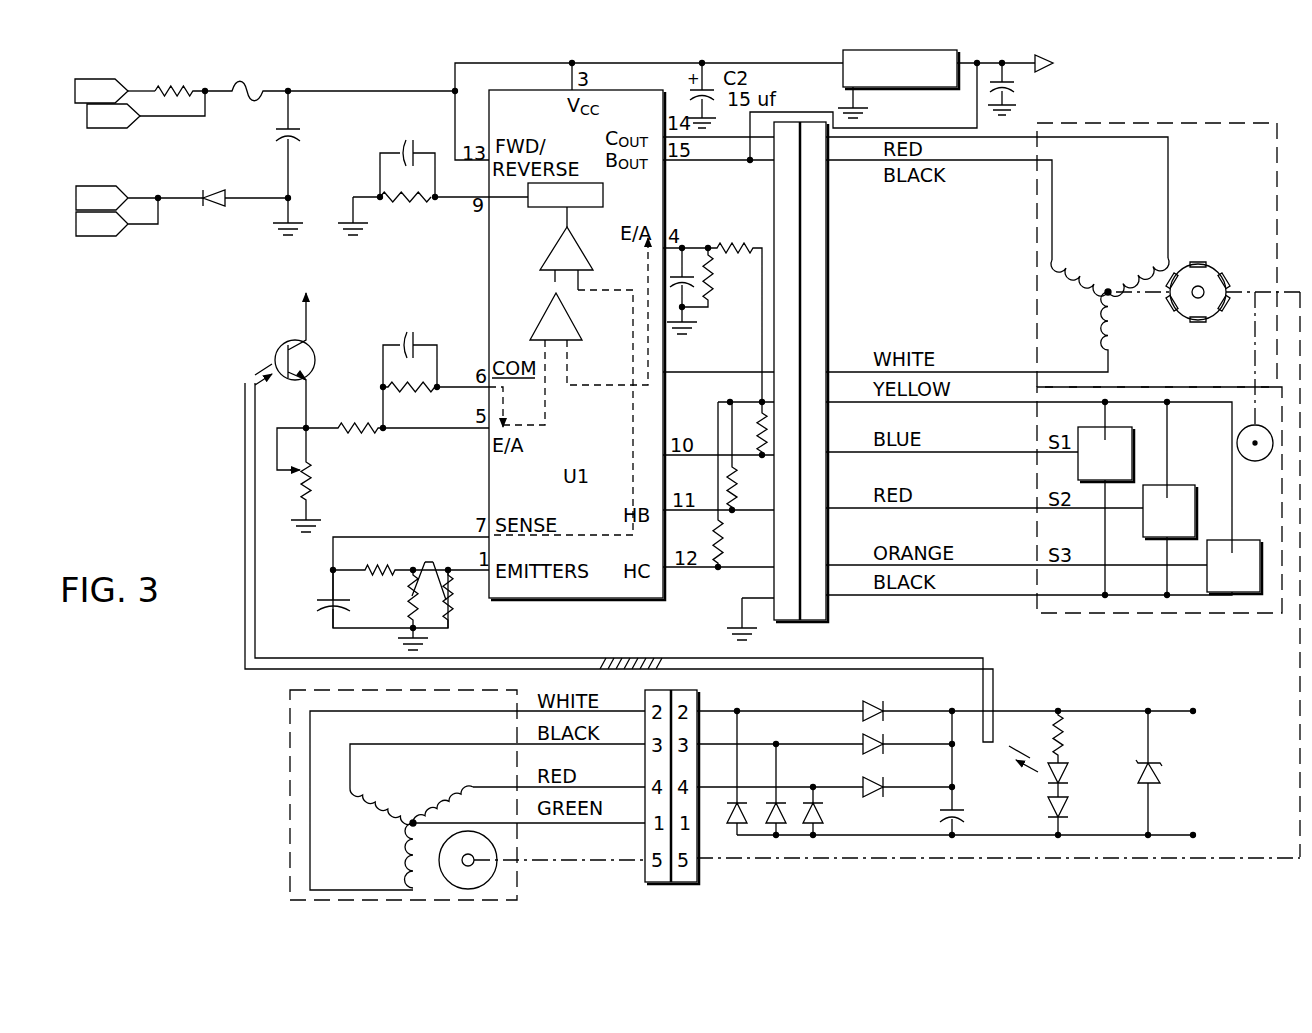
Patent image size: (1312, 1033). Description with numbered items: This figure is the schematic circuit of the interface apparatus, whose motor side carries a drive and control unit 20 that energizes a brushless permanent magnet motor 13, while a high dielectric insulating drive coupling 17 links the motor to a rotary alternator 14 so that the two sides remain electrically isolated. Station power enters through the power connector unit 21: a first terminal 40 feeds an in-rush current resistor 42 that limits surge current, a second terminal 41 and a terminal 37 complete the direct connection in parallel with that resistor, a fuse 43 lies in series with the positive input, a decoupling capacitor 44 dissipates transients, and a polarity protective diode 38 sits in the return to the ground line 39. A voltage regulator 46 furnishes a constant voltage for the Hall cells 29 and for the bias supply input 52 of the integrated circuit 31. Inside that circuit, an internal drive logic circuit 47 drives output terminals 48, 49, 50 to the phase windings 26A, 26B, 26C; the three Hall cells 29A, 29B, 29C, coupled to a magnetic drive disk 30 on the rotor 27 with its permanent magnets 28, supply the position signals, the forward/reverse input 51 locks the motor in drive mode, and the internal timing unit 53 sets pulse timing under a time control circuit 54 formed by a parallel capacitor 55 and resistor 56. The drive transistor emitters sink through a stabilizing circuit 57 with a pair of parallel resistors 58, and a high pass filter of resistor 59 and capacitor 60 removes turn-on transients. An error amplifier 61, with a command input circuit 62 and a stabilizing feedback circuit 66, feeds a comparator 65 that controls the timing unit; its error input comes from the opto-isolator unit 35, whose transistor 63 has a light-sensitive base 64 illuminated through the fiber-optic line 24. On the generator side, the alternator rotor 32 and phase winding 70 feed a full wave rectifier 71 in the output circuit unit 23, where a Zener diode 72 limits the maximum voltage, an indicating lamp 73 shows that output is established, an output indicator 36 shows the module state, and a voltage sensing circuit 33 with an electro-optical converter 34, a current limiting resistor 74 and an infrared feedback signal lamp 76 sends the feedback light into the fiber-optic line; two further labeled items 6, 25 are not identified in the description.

The first terminal 40 is at (95, 78).
The second terminal 41 is at (113, 130).
The surge or in-rush current resistor 42 is at (170, 85).
The fuse 43 is at (257, 83).
The decoupling capacitor 44 is at (307, 133).
The terminal 37 is at (100, 238).
The polarity protective diode 38 is at (213, 210).
The ground line 39 is at (298, 240).
The power connector unit 21 is at (268, 258).
The drive and control unit 20 is at (378, 293).
The time control circuit 54 is at (371, 174).
The capacitor 55 is at (408, 140).
The resistor 56 is at (400, 204).
The forward/reverse input 51 is at (484, 167).
The bias supply input 52 is at (568, 80).
The internal timing unit 53 is at (603, 190).
The drive pulse output terminal 50 is at (713, 140).
The drive pulse output terminal 49 is at (761, 165).
The voltage regulator 46 is at (942, 85).
The drive pulse output terminal 48 is at (735, 372).
The command input circuit 62 is at (695, 246).
The comparator 65 is at (550, 252).
The error amplifier 61 is at (542, 313).
The stabilizing feedback circuit 66 is at (428, 338).
The base 64 is at (280, 345).
The transistor 63 is at (310, 347).
The opto-electric converter 35 is at (283, 360).
The sensor 6 is at (355, 390).
The internal drive logic circuit 47 is at (487, 467).
The integrated circuit 31 is at (510, 484).
The resistor 59 is at (376, 553).
The pair of parallel resistors 58 is at (408, 594).
The stabilizing circuit 57 is at (464, 599).
The capacitor 60 is at (318, 603).
The fiber-optic line 24 is at (637, 658).
The motor 13 is at (1063, 255).
The stator winding 25 is at (1092, 318).
The phase winding 26A is at (1129, 266).
The phase winding 26B is at (1082, 256).
The phase winding 26C is at (1116, 330).
The rotor 27 is at (1190, 308).
The permanent magnets 28 is at (1198, 262).
The Hall cells 29 is at (1054, 469).
The Hall cell 29A is at (1250, 594).
The Hall cell 29B is at (1194, 492).
The Hall cell 29C is at (1080, 463).
The magnetic drive disk 30 is at (1242, 440).
The insulating drive coupling 17 is at (1298, 682).
The output circuit unit 23 is at (1036, 697).
The rectifier 71 is at (805, 707).
The feedback signal lamp 76 is at (1031, 756).
The current limiting resistor 74 is at (1063, 731).
The Zener diode 72 is at (1160, 773).
The indicating lamp 73 is at (1043, 812).
The electro-optical converter 34 is at (1046, 780).
The output indicator 36 is at (1071, 800).
The voltage sensing circuit 33 is at (1028, 812).
The alternator 14 is at (467, 795).
The phase winding 70 is at (430, 845).
The alternator rotor 32 is at (484, 847).